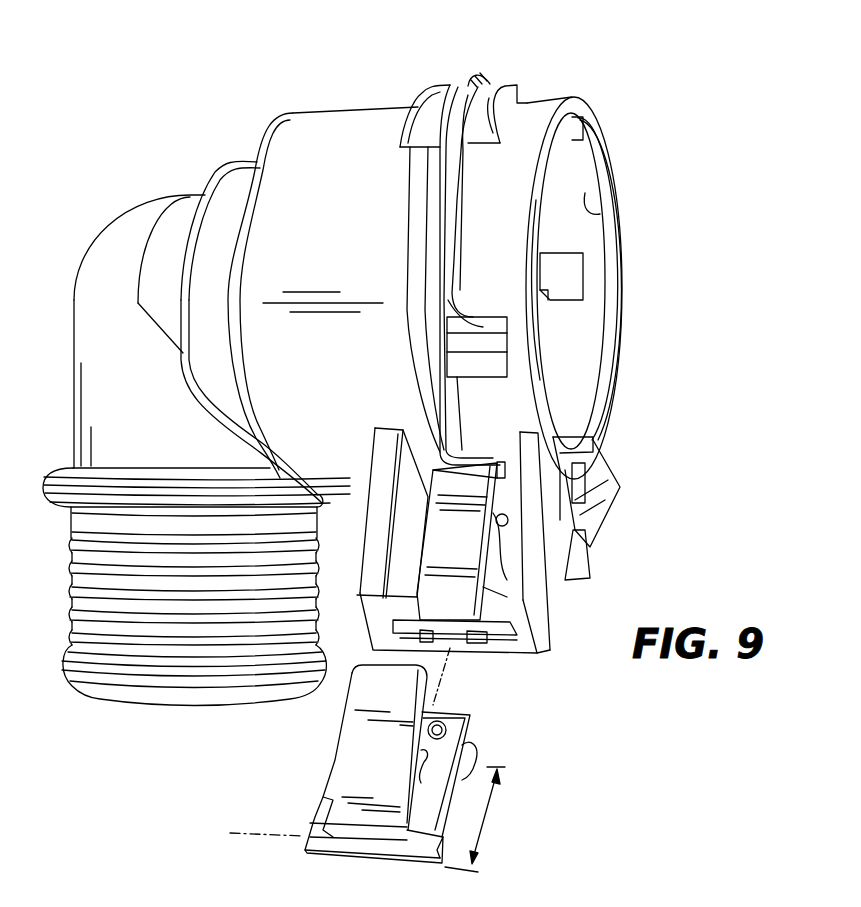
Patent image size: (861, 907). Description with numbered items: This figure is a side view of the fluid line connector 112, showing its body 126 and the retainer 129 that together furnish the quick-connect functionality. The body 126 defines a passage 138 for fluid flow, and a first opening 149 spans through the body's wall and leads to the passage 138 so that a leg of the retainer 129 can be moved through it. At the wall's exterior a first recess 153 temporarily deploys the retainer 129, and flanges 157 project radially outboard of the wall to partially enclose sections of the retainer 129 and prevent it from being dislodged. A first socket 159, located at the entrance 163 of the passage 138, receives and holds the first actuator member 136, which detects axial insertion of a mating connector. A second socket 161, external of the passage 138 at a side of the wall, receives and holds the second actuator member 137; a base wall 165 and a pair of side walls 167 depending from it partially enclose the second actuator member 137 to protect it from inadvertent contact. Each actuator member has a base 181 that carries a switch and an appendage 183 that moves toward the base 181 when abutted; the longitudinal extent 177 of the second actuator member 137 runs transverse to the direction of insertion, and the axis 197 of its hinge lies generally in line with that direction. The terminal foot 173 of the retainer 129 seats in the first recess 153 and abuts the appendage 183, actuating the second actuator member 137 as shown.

The fluid line connector 112 is at (309, 111).
The body 126 is at (363, 137).
The retainer 129 is at (476, 79).
The first actuator member 136 is at (600, 471).
The second actuator member 137 is at (437, 534).
The passage 138 is at (600, 214).
The first opening 149 is at (435, 277).
The first recess 153 is at (473, 317).
The flanges 157 is at (449, 83).
The first socket 159 is at (590, 541).
The second socket 161 is at (478, 644).
The entrance 163 is at (607, 336).
The base wall 165 is at (512, 641).
The side walls 167 is at (383, 478).
The terminal foot 173 is at (484, 470).
The longitudinal extent 177 is at (478, 819).
The base 181 is at (478, 776).
The appendage 183 is at (447, 523).
The axis of the hinge 197 is at (264, 835).